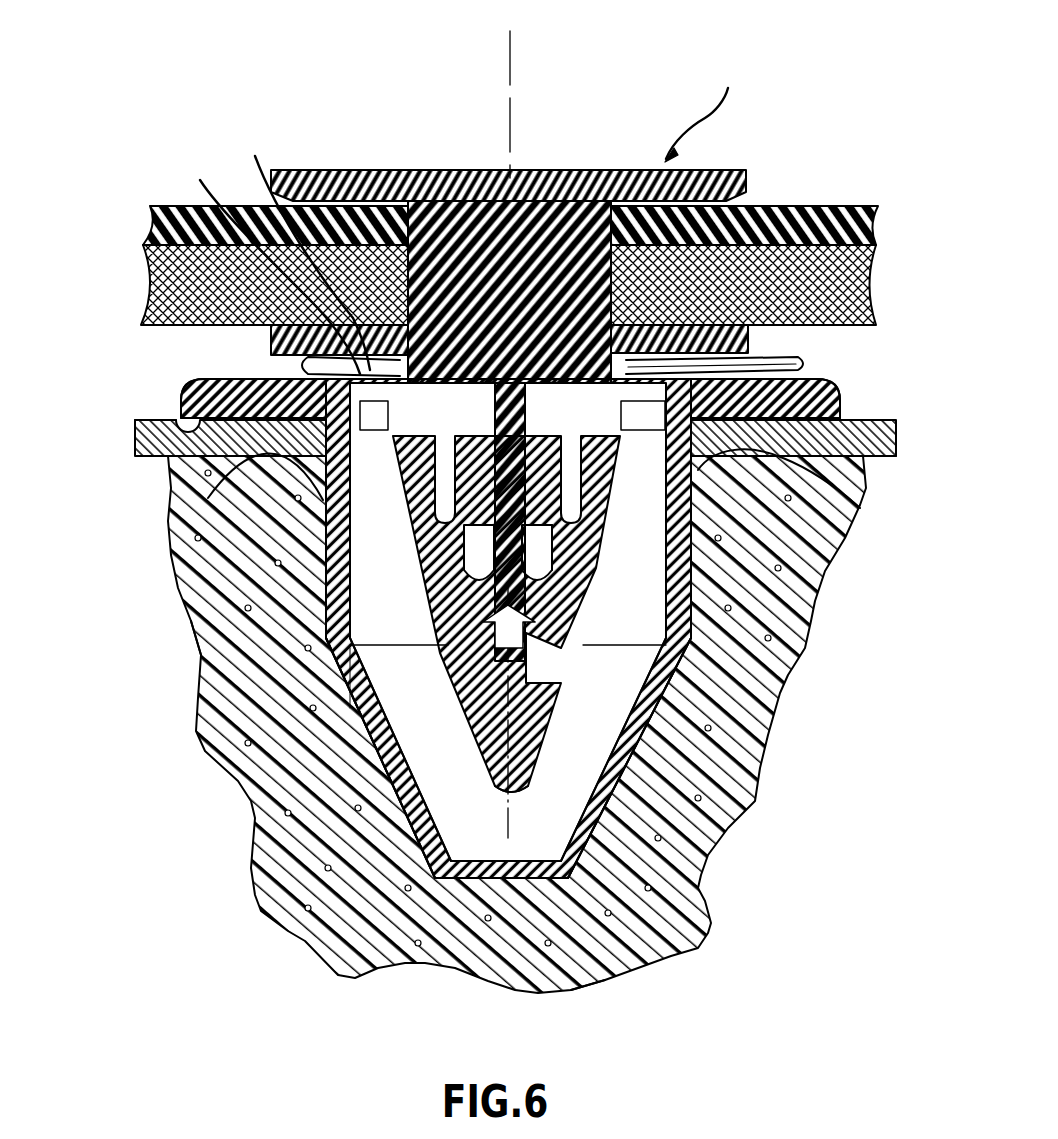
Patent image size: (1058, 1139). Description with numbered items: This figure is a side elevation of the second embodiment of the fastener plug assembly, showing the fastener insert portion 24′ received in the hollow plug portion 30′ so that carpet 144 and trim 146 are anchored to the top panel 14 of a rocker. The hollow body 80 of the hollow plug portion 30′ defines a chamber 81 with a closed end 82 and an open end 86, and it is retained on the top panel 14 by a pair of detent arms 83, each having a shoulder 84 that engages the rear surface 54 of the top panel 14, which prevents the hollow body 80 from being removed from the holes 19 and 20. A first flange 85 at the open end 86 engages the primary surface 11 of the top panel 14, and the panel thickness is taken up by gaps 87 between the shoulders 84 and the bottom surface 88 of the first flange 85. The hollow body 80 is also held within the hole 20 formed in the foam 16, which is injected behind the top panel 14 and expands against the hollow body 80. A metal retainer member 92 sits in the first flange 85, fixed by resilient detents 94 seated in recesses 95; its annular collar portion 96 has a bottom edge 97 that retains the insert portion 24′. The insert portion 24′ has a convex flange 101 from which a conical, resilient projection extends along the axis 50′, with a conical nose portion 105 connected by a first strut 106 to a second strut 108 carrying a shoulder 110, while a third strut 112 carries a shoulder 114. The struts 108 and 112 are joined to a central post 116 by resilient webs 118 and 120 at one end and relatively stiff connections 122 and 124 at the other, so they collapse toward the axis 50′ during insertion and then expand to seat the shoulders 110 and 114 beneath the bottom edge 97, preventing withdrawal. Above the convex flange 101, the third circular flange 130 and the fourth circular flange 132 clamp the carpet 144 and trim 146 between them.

The axis 50′ is at (503, 78).
The fastener insert portion 24′ is at (705, 105).
The fourth circular flange 132 is at (330, 162).
The central post 116 is at (476, 470).
The resilient detents 94 is at (268, 257).
The retainer member 92 is at (297, 242).
The recesses 95 is at (346, 358).
The trim 146 is at (812, 192).
The carpet 144 is at (853, 257).
The third circular flange 130 is at (262, 333).
The annular collar portion 96 is at (708, 357).
The convex flange 101 is at (728, 363).
The first flange 85 is at (836, 400).
The top panel 14 is at (868, 398).
The primary surface 11 is at (148, 413).
The bottom edge 97 is at (205, 396).
The bottom surface 88 is at (170, 415).
The gaps 87 is at (200, 488).
The shoulder 84 is at (320, 535).
The detent arms 83 is at (320, 560).
The shoulder 110 is at (340, 560).
The resilient web 118 is at (340, 588).
The second strut 108 is at (360, 607).
The relatively stiff connection 122 is at (322, 681).
The hole 20 is at (355, 645).
The first strut 106 is at (400, 665).
The conical nose portion 105 is at (483, 775).
The chamber 81 is at (587, 745).
The open end 86 is at (377, 417).
The hole 19 is at (685, 410).
The shoulder 114 is at (616, 442).
The resilient web 120 is at (552, 477).
The relatively stiff connection 124 is at (572, 642).
The third strut 112 is at (718, 670).
The hollow plug portion 30′ is at (640, 790).
The foam 16 is at (690, 848).
The closed end 82 is at (603, 950).
The rear surface 54 is at (877, 450).
The hollow body 80 is at (700, 600).